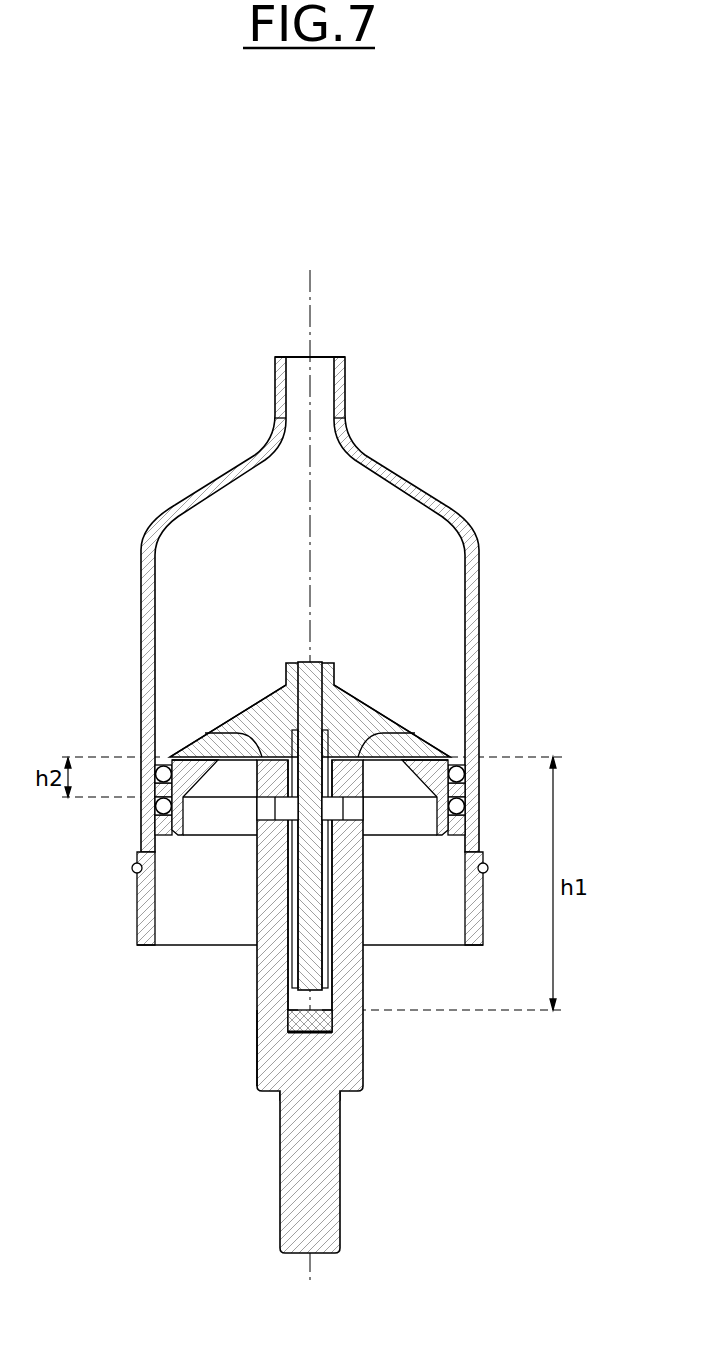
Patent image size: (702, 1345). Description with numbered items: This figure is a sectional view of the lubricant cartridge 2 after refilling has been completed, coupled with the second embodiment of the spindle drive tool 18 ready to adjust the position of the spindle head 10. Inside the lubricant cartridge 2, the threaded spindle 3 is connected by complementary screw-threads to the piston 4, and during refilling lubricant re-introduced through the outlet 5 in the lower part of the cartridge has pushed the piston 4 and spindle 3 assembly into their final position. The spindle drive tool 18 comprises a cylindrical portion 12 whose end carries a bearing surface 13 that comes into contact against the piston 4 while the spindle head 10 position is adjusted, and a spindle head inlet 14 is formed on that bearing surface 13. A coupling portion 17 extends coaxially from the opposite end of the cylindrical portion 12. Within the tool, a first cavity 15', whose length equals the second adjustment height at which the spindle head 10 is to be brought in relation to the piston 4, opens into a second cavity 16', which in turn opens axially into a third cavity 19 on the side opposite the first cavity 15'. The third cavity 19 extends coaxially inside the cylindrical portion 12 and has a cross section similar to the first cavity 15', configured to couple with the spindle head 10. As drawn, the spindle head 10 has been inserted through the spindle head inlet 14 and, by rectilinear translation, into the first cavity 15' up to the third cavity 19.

The lubricant cartridge 2 is at (138, 610).
The threaded spindle 3 is at (320, 685).
The piston 4 is at (366, 729).
The outlet 5 is at (328, 389).
The spindle head 10 is at (296, 1022).
The cylindrical portion 12 is at (252, 971).
The bearing surface 13 is at (205, 733).
The spindle head inlet 14 is at (242, 721).
The first cavity 15' is at (418, 844).
The second cavity 16' is at (400, 776).
The coupling portion 17 is at (274, 1192).
The spindle drive tool 18 is at (252, 1018).
The third cavity 19 is at (327, 962).